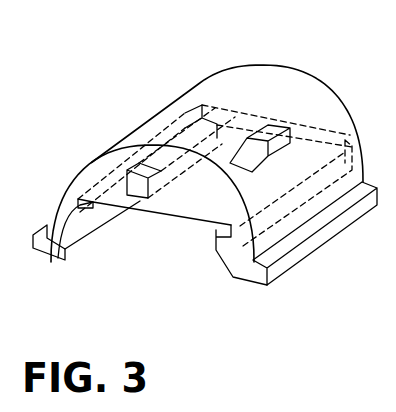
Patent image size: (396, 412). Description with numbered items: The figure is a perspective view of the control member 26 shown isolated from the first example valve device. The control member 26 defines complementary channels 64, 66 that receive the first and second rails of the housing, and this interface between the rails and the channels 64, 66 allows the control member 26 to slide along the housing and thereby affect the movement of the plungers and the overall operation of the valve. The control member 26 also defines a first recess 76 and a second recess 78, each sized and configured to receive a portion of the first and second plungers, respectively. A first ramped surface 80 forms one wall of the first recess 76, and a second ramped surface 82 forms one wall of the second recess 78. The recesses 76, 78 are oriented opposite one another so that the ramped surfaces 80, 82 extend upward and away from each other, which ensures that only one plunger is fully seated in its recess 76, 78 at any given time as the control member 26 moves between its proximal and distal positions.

The control member 26 is at (288, 83).
The channel 64 is at (51, 262).
The channel 66 is at (216, 230).
The first recess 76 is at (158, 188).
The second recess 78 is at (290, 137).
The first ramped surface 80 is at (182, 155).
The second ramped surface 82 is at (247, 136).